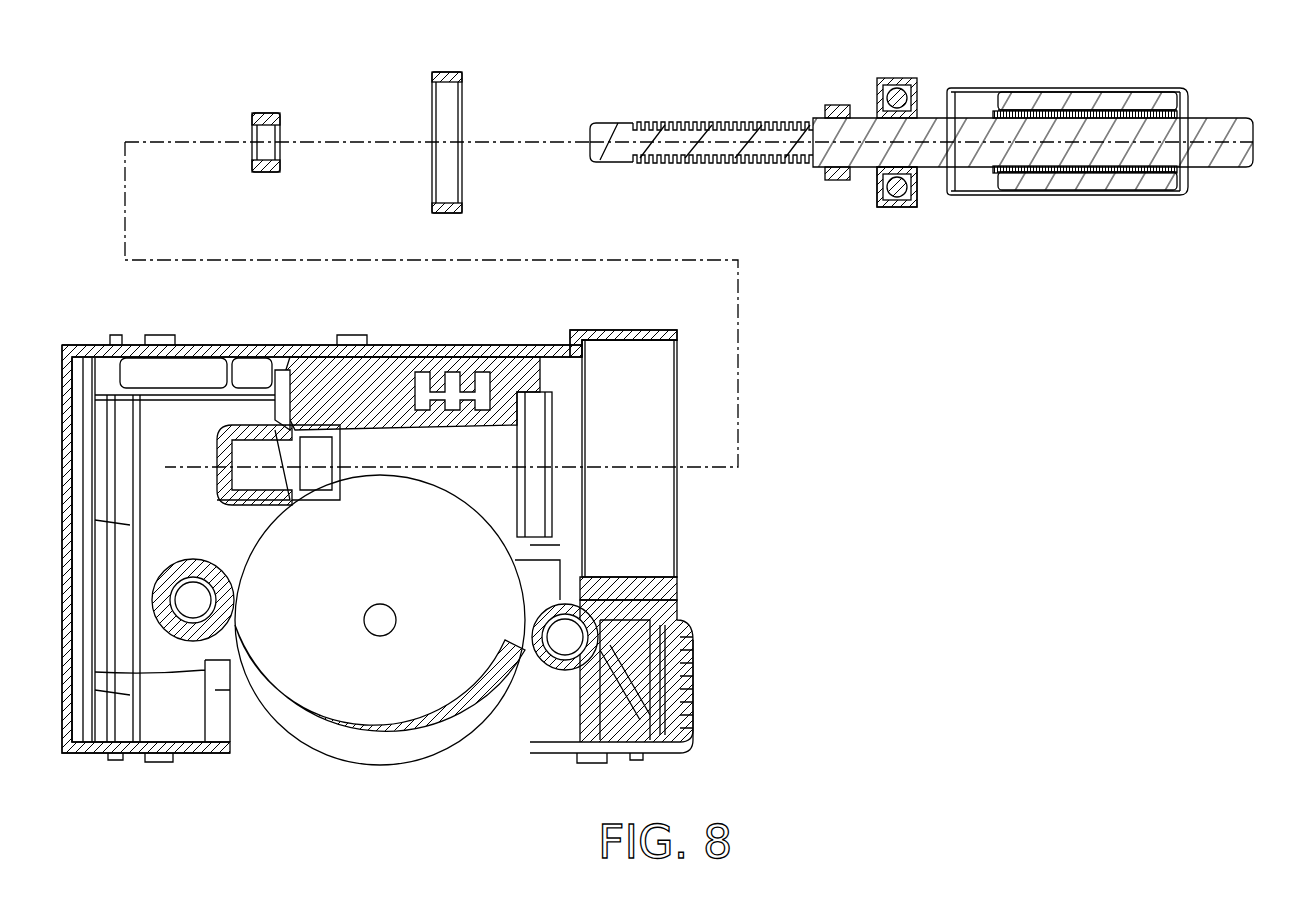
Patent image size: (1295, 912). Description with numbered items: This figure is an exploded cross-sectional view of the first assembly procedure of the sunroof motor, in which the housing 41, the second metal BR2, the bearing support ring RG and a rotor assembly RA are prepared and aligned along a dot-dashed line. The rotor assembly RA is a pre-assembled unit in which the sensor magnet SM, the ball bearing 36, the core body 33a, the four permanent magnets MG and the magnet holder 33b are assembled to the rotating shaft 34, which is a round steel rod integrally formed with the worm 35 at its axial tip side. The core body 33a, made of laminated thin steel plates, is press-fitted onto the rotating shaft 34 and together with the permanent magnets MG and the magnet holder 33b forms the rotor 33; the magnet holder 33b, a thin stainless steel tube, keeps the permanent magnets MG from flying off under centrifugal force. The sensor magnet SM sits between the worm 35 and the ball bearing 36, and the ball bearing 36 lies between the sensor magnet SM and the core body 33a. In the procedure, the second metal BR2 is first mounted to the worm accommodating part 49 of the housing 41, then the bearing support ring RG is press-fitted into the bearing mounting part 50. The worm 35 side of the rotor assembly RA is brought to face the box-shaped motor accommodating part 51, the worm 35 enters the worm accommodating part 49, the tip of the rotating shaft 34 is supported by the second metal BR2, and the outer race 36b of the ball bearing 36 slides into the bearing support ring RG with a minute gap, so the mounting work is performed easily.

The rotor 33 is at (1101, 158).
The core body 33a is at (1105, 172).
The magnet holder 33b is at (975, 195).
The rotating shaft 34 is at (1210, 152).
The worm 35 is at (715, 122).
The ball bearing 36 is at (897, 210).
The outer race 36b is at (885, 207).
The housing 41 is at (205, 345).
The worm accommodating part 49 is at (342, 440).
The bearing mounting part 50 is at (540, 410).
The motor accommodating part 51 is at (632, 520).
The second metal BR2 is at (265, 113).
The bearing support ring RG is at (438, 72).
The sensor magnet SM is at (840, 178).
The permanent magnet MG is at (1110, 95).
The rotor assembly RA is at (1048, 200).